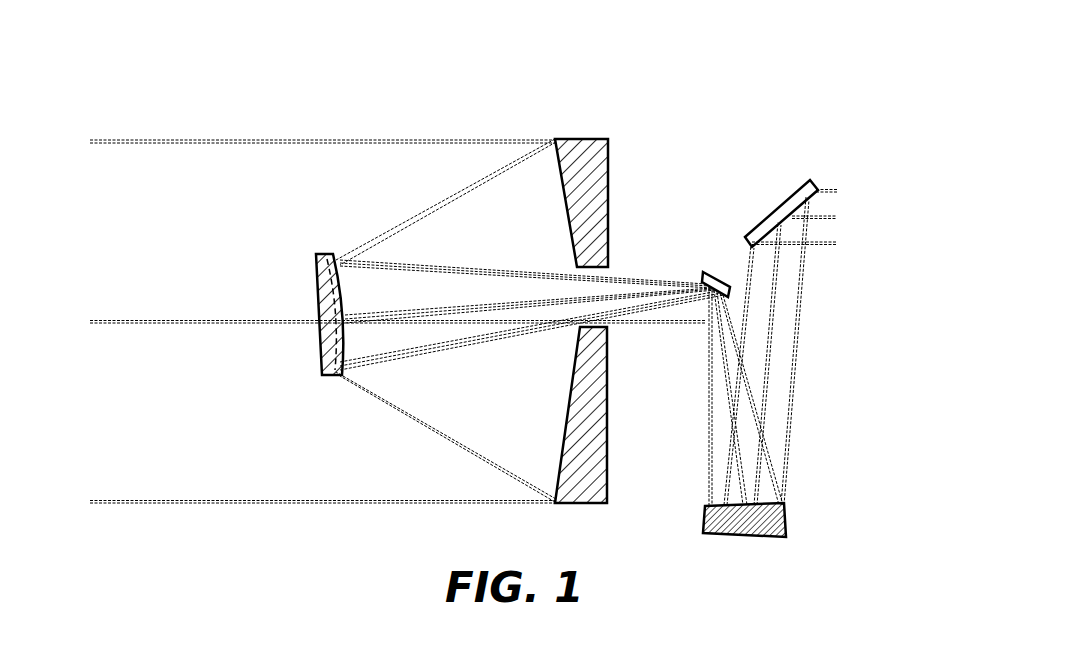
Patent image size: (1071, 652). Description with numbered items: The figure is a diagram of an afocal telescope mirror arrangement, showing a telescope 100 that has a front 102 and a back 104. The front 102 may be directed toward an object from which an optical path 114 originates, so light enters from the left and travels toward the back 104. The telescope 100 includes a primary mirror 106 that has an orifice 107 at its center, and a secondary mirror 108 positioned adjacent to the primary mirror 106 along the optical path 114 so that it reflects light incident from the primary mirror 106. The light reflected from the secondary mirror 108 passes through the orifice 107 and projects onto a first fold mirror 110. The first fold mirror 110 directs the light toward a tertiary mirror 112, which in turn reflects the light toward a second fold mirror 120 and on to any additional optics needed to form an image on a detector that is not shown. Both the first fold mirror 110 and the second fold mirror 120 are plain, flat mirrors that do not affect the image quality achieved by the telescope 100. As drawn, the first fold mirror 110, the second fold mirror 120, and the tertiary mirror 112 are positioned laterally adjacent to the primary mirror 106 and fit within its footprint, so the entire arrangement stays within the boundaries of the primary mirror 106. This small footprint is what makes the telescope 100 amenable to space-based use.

The telescope 100 is at (672, 38).
The front 102 is at (46, 315).
The back 104 is at (875, 322).
The primary mirror 106 is at (579, 158).
The orifice 107 is at (553, 250).
The secondary mirror 108 is at (326, 280).
The first fold mirror 110 is at (719, 285).
The tertiary mirror 112 is at (752, 518).
The optical path 114 is at (107, 525).
The second fold mirror 120 is at (798, 198).